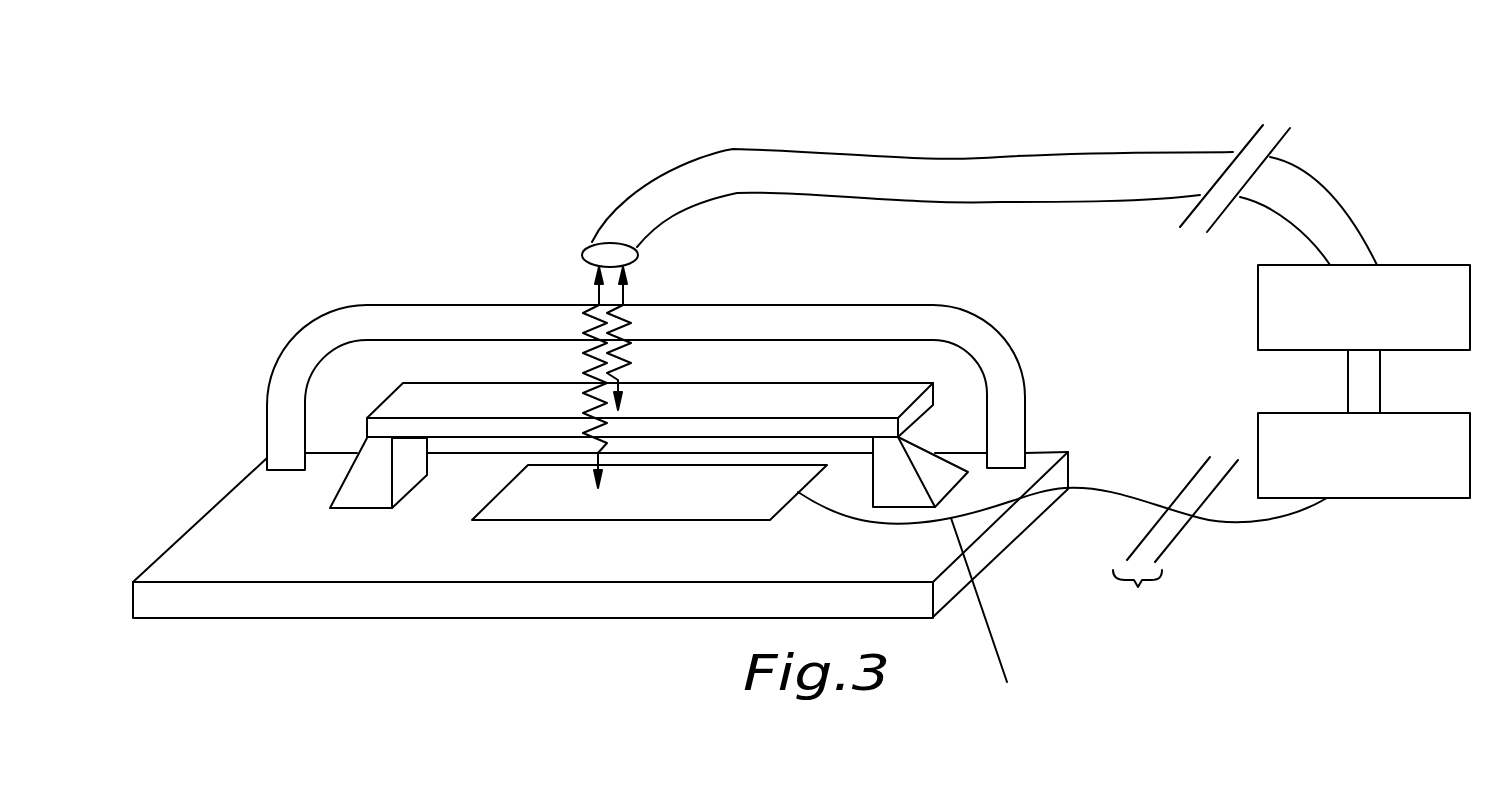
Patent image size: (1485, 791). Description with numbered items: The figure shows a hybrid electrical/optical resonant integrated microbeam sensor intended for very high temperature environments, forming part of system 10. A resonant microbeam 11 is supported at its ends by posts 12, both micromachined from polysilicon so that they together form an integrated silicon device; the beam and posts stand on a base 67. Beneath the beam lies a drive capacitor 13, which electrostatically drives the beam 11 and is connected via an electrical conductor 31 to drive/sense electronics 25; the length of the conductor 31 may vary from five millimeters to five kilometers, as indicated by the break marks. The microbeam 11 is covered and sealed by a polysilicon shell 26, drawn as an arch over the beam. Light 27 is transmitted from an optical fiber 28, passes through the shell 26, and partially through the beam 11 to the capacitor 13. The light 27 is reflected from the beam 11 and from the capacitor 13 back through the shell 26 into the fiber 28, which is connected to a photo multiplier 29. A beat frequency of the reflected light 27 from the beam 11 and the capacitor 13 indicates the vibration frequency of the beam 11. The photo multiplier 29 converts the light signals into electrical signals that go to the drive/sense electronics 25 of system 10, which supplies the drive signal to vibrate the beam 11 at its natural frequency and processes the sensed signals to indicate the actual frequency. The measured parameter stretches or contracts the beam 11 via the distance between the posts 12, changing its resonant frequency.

The system 10 is at (1342, 95).
The resonant microbeam 11 is at (460, 433).
The posts 12 is at (368, 495).
The drive capacitor 13 is at (562, 522).
The drive/sense electronics 25 is at (1258, 425).
The polysilicon shell 26 is at (992, 355).
The light 27 is at (627, 282).
The fiber 28 is at (1193, 152).
The photo multiplier 29 is at (1258, 302).
The electrical conductor 31 is at (1267, 525).
The substrate base 67 is at (1007, 528).